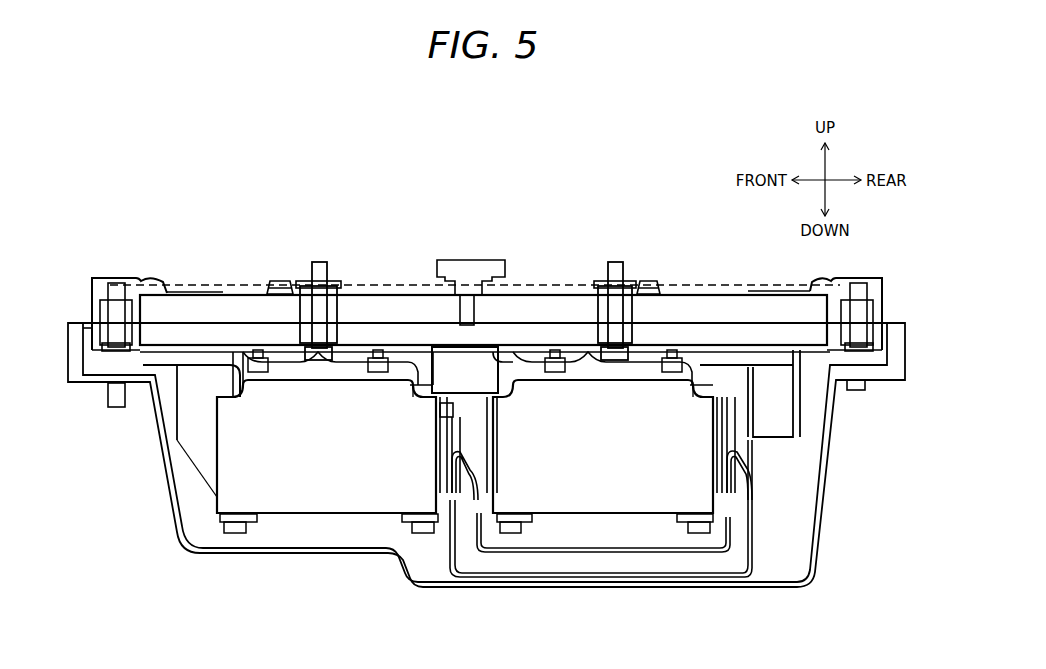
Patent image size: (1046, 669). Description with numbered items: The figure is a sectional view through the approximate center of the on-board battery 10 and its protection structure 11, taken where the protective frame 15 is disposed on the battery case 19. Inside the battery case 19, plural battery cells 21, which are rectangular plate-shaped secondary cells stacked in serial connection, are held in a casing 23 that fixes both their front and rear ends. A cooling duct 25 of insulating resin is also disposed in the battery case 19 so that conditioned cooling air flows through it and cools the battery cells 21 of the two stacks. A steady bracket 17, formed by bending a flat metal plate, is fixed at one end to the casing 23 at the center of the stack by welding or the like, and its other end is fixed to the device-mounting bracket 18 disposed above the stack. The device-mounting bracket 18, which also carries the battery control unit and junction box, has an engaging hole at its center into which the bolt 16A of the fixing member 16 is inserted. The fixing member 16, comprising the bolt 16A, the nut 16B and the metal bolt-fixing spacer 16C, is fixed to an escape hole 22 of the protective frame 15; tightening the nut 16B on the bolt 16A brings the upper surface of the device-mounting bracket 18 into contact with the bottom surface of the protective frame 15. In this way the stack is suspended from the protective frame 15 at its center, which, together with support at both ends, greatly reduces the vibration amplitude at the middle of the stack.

The on-board battery 10 is at (486, 178).
The protection structure 11 is at (475, 214).
The protective frame 15 is at (183, 316).
The fixing member 16 is at (363, 201).
The bolt 16A is at (333, 318).
The nut 16B is at (312, 306).
The bolt-fixing spacer 16C is at (281, 283).
The steady bracket 17 is at (422, 360).
The device-mounting bracket 18 is at (383, 350).
The battery case 19 is at (259, 554).
The battery cell 21 is at (343, 505).
The escape hole 22 is at (337, 323).
The casing 23 is at (217, 445).
The cooling duct 25 is at (641, 578).